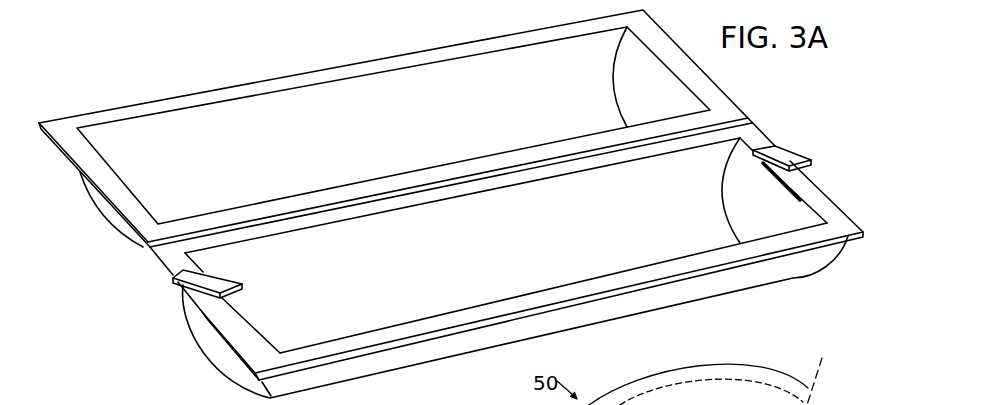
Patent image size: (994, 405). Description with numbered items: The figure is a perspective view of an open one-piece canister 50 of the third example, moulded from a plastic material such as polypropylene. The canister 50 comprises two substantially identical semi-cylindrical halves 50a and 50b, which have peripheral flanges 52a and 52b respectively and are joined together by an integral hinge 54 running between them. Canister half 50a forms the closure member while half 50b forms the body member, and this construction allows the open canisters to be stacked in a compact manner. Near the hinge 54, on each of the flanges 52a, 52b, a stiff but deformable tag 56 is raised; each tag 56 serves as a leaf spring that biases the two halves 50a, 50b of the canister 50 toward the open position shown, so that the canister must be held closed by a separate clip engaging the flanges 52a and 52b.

The canister 50 is at (136, 98).
The canister half 50a is at (340, 98).
The canister half 50b is at (447, 266).
The peripheral flange 52a is at (240, 90).
The peripheral flange 52b is at (835, 214).
The integral hinge 54 is at (428, 188).
The tag 56 is at (791, 156).